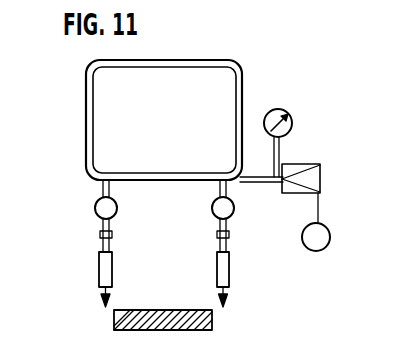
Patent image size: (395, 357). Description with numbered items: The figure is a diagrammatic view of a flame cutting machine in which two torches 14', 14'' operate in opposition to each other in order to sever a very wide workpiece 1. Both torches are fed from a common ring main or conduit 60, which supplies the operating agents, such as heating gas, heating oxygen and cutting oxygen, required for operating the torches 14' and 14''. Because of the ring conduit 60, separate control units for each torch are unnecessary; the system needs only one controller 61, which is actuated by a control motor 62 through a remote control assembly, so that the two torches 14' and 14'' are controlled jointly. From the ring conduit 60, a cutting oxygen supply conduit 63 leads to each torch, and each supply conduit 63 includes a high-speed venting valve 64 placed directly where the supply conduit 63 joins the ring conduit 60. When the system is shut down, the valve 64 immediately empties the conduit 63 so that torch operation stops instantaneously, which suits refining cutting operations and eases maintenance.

The ring main or conduit 60 is at (243, 73).
The controller 61 is at (308, 164).
The control motor 62 is at (331, 241).
The cutting oxygen supply conduit 63 is at (219, 189).
The high-speed venting valve 64 is at (212, 211).
The torch 14' is at (69, 263).
The torch 14'' is at (257, 263).
The workpiece 1 is at (164, 310).